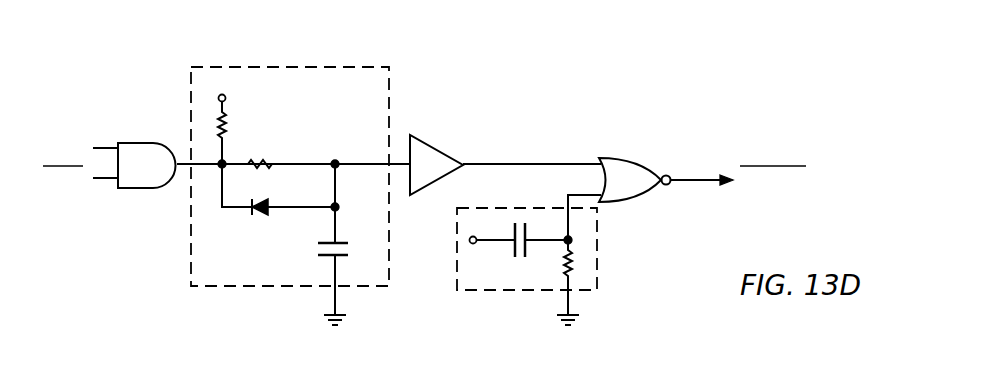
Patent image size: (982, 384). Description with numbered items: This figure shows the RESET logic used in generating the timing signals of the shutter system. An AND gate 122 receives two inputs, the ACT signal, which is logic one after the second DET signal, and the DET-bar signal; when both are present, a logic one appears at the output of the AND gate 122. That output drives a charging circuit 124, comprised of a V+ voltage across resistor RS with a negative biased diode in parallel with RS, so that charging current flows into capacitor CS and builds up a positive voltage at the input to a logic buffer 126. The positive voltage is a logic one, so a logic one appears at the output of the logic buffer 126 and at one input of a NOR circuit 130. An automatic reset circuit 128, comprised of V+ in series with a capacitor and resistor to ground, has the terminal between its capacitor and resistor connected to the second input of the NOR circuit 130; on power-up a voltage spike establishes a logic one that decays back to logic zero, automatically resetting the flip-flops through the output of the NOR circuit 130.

The AND gate 122 is at (133, 143).
The charging circuit 124 is at (389, 67).
The logic buffer 126 is at (440, 125).
The automatic reset circuit 128 is at (597, 252).
The NOR circuit 130 is at (642, 158).